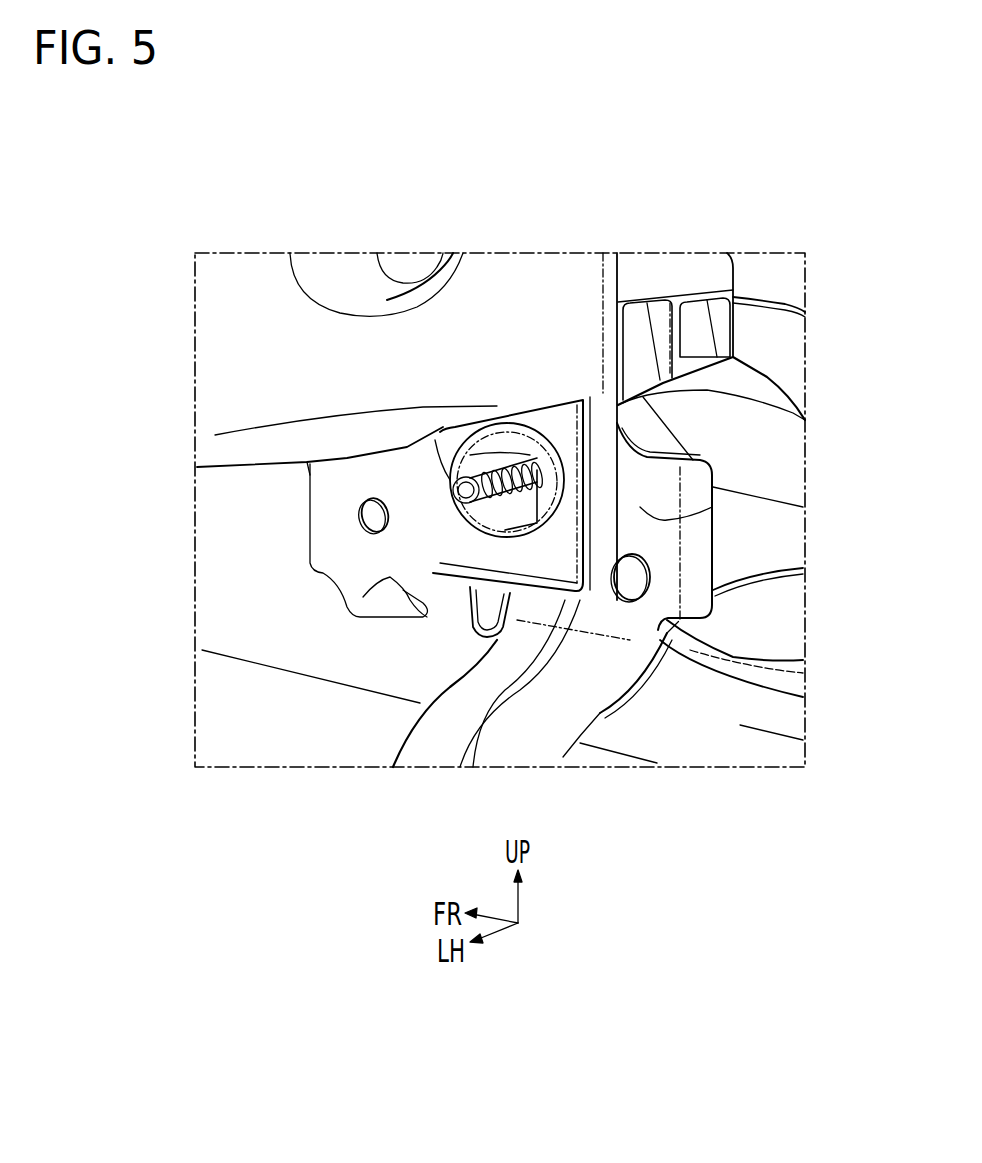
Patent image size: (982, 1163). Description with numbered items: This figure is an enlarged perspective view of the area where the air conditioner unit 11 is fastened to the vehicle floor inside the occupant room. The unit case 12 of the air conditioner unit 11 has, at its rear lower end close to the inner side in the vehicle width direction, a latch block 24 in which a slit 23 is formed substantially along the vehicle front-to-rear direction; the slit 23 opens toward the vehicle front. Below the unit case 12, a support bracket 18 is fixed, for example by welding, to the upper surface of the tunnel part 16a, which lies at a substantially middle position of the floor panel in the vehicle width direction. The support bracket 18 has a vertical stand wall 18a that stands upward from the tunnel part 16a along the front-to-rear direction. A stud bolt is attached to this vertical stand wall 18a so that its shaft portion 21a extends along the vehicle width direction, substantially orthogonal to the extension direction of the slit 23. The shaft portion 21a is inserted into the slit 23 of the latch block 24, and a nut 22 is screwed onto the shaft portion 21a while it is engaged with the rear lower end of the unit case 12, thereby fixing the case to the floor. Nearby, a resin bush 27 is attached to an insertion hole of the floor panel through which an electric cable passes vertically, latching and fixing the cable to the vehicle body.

The air conditioner unit 11 is at (583, 257).
The unit case 12 is at (672, 268).
The support bracket 18 is at (680, 660).
The vertical stand wall 18a is at (712, 510).
The bush 27 is at (797, 670).
The tunnel part 16a is at (748, 727).
The shaft portion 21a is at (450, 480).
The nut 22 is at (485, 528).
The slit 23 is at (530, 527).
The latch block 24 is at (540, 560).